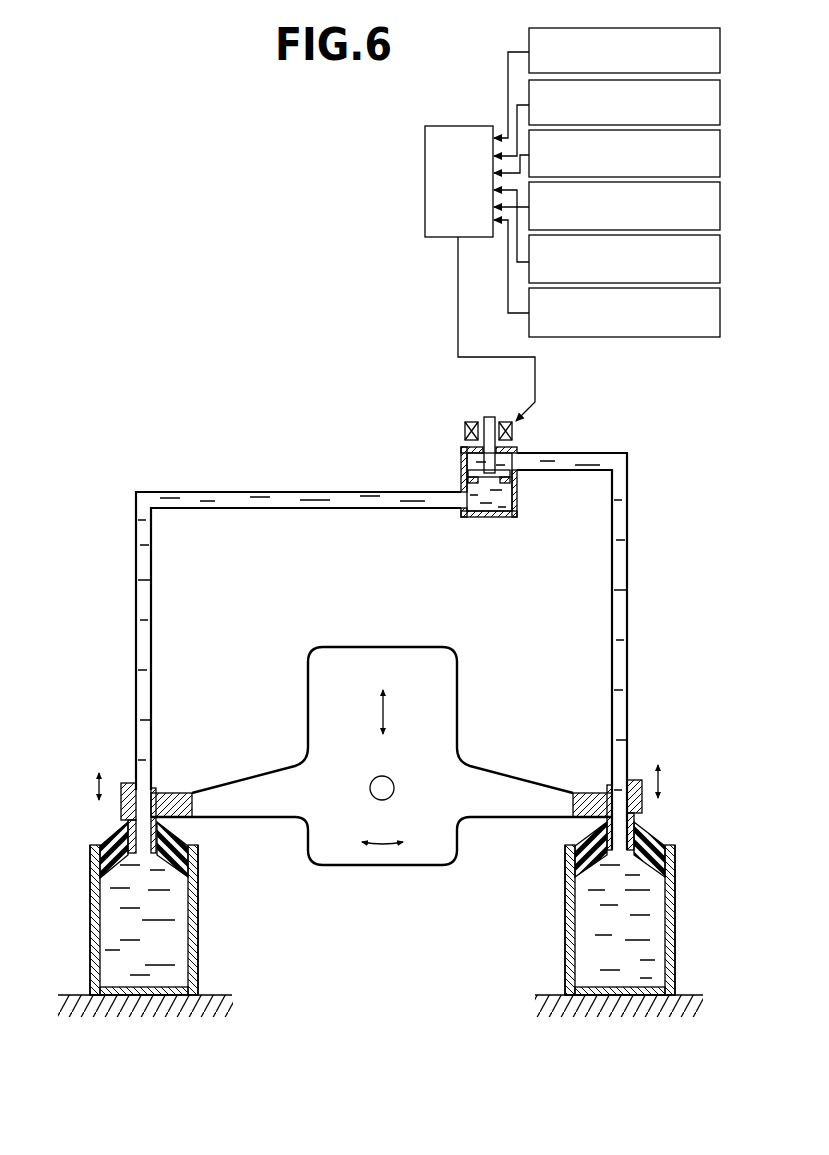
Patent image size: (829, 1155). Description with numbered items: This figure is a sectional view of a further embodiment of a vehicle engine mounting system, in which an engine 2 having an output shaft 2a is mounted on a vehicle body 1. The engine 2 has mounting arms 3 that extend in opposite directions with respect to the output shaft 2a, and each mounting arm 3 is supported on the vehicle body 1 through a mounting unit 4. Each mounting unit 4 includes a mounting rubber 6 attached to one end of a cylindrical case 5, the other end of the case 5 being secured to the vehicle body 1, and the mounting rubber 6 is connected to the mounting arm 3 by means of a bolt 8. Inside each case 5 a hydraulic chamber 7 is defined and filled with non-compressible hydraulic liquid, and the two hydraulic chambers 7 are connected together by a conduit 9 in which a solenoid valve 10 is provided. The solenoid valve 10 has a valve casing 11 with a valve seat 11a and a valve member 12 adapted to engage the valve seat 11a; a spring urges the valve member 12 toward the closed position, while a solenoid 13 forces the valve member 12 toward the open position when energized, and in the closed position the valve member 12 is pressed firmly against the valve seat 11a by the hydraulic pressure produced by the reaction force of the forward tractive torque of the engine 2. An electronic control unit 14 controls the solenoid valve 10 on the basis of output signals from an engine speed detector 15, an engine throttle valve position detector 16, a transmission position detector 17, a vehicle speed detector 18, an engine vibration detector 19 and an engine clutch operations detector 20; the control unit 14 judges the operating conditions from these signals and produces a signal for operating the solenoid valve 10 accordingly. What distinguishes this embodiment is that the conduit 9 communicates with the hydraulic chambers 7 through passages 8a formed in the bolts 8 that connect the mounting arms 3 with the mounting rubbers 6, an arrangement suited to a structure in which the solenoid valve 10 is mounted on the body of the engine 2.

The vehicle body 1 is at (197, 1017).
The engine 2 is at (306, 661).
The output shaft 2a is at (369, 788).
The mounting arm 3 is at (122, 783).
The mounting unit 4 is at (87, 846).
The cylindrical case 5 is at (90, 915).
The mounting rubber 6 is at (120, 843).
The hydraulic chamber 7 is at (107, 952).
The bolt 8 is at (165, 790).
The passage 8a is at (153, 788).
The conduit 9 is at (247, 492).
The solenoid valve 10 is at (465, 513).
The valve casing 11 is at (500, 517).
The valve seat 11a is at (462, 487).
The valve member 12 is at (484, 440).
The solenoid 13 is at (513, 430).
The electronic control unit 14 is at (461, 126).
The engine speed detector 15 is at (720, 28).
The engine throttle valve position detector 16 is at (721, 90).
The transmission position detector 17 is at (721, 146).
The vehicle speed detector 18 is at (721, 204).
The engine vibration detector 19 is at (721, 253).
The engine clutch operations detector 20 is at (721, 302).